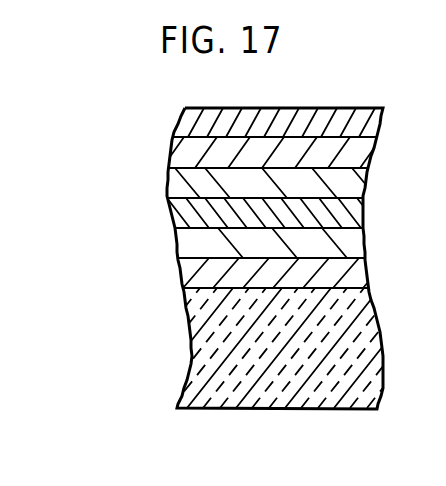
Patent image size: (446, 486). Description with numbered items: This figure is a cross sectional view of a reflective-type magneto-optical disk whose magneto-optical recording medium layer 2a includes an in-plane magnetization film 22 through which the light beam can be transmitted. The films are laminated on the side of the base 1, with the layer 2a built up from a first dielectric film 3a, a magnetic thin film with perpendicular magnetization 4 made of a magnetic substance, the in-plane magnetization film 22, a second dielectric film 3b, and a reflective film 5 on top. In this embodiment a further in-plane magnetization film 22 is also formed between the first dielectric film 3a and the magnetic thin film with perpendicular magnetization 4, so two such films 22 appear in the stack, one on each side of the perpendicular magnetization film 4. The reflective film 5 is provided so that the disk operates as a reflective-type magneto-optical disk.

The base 1 is at (200, 362).
The magneto-optical recording medium layer 2a is at (210, 196).
The first dielectric film 3a is at (240, 282).
The second dielectric film 3b is at (188, 153).
The magnetic thin film with perpendicular magnetization 4 is at (189, 212).
The reflective film 5 is at (188, 124).
The in-plane magnetization film 22 is at (189, 182).